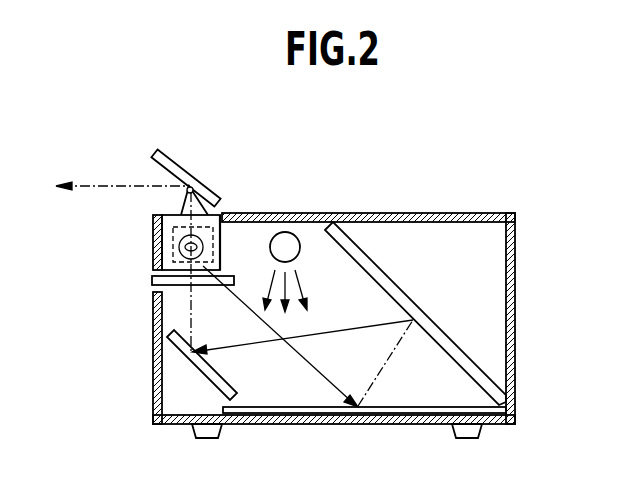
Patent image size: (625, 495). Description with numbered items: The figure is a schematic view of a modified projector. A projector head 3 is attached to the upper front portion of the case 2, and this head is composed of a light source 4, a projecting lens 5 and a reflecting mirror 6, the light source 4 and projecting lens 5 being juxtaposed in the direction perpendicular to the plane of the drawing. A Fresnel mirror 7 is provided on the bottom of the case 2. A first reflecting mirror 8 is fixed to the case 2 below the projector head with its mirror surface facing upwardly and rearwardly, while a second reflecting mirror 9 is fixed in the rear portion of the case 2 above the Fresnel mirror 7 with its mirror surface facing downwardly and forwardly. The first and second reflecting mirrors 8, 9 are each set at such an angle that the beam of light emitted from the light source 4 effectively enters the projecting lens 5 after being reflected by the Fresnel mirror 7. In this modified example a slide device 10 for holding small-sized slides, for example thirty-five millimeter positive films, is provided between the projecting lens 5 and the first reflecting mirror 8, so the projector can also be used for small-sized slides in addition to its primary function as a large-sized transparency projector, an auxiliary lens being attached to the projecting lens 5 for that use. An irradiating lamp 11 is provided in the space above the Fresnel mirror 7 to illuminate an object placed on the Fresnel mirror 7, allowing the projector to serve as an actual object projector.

The case 2 is at (455, 212).
The projector head 3 is at (226, 246).
The light source 4 is at (185, 249).
The projecting lens 5 is at (175, 232).
The reflecting mirror 6 is at (170, 160).
The Fresnel mirror 7 is at (318, 413).
The first reflecting mirror 8 is at (224, 382).
The second reflecting mirror 9 is at (455, 345).
The slide device 10 is at (153, 295).
The irradiating lamp 11 is at (288, 234).